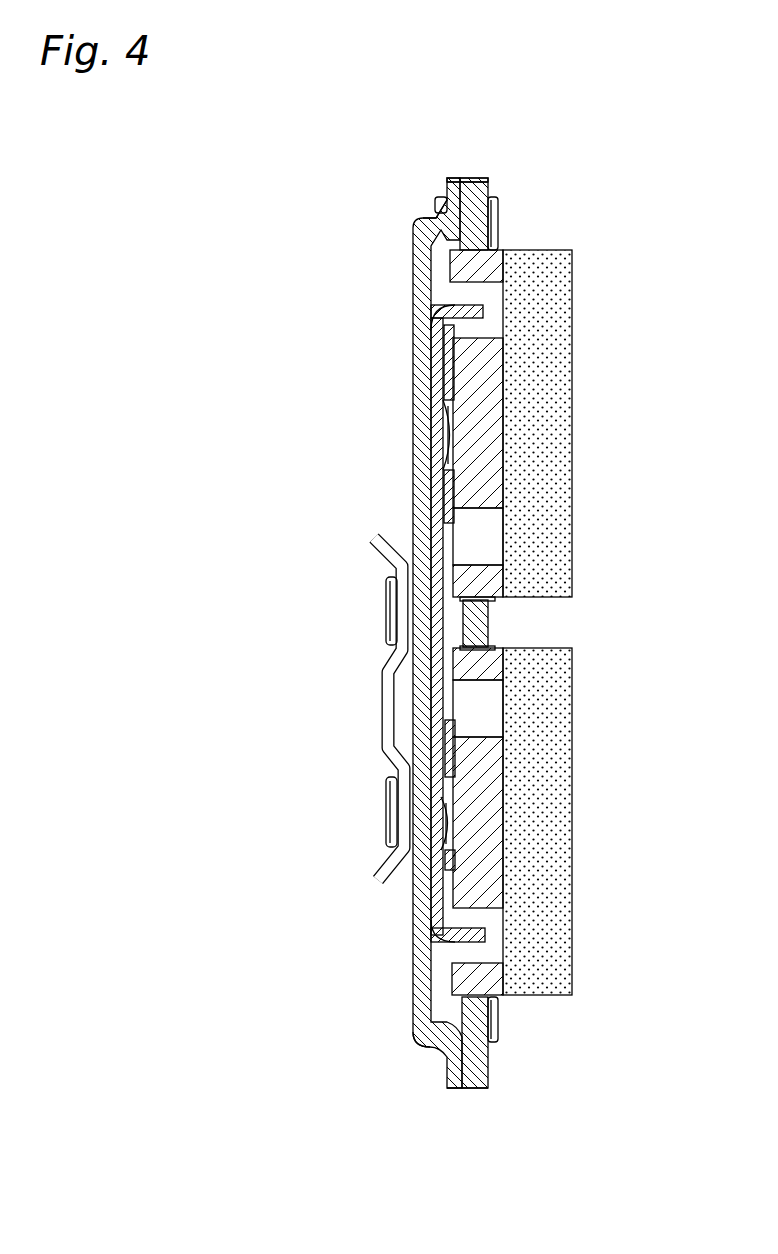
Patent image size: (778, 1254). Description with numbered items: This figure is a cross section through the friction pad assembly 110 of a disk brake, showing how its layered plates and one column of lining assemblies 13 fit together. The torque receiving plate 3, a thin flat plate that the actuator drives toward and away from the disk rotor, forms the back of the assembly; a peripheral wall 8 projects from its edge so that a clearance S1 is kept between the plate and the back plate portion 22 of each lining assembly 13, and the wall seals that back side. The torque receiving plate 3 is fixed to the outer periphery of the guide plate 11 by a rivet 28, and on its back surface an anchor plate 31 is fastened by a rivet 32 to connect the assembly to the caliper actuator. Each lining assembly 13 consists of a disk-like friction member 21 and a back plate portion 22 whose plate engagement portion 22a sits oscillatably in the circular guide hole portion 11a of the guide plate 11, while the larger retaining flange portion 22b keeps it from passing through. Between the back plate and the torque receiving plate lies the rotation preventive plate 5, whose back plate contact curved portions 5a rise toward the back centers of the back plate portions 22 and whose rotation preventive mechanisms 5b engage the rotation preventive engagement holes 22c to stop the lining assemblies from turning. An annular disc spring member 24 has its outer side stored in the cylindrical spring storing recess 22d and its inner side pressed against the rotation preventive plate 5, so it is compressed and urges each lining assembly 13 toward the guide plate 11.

The friction pad assembly 110 is at (360, 200).
The torque receiving plate 3 is at (405, 280).
The rivet 28 is at (435, 203).
The peripheral wall 8 is at (450, 1058).
The clearance S1 is at (445, 975).
The guide plate 11 is at (480, 172).
The guide hole portion 11a is at (475, 598).
The lining assembly 13 is at (479, 626).
The back plate portion 22 is at (479, 626).
The plate engagement portion 22a is at (482, 235).
The retaining flange portion 22b is at (465, 225).
The rotation preventive engagement hole 22c is at (500, 290).
The spring storing recess 22d is at (450, 465).
The friction member 21 is at (613, 333).
The rotation preventive plate 5 is at (493, 625).
The back plate contact curved portion 5a is at (458, 415).
The rotation preventive mechanism 5b is at (485, 315).
The spring member 24 is at (447, 350).
The anchor plate 31 is at (348, 709).
The rivet 32 is at (387, 608).